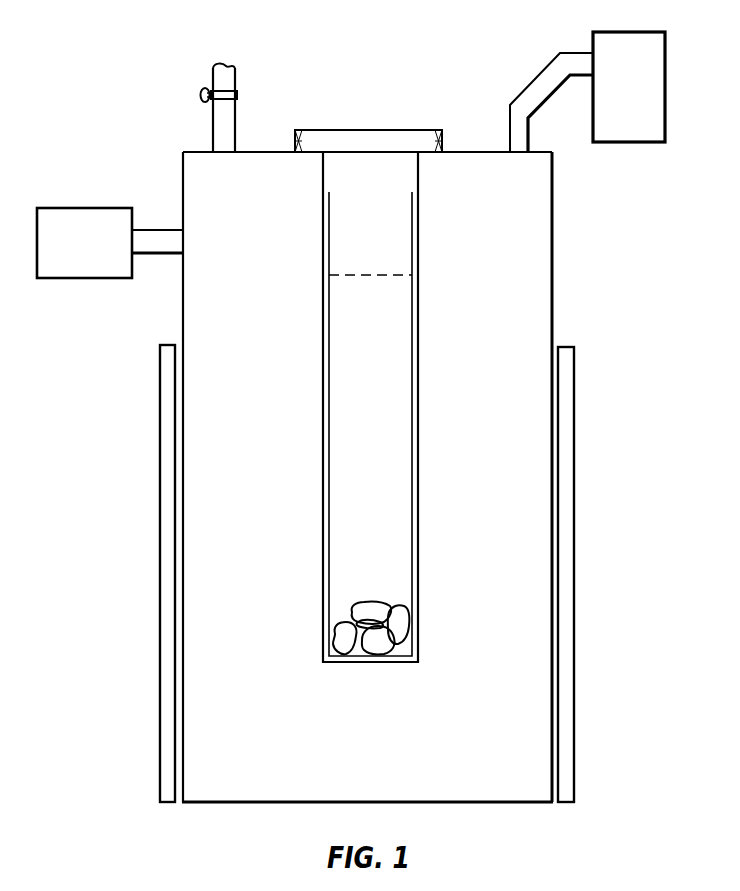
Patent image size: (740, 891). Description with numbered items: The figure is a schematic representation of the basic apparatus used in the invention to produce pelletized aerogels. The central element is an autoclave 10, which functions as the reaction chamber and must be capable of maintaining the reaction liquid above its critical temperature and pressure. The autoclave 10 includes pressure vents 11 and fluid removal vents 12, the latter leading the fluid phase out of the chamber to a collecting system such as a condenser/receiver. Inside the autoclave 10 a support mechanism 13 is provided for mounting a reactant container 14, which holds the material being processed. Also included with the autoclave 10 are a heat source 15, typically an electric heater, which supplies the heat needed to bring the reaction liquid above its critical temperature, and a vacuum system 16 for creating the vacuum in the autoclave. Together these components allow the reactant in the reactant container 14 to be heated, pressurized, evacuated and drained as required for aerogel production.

The autoclave 10 is at (553, 255).
The pressure vents 11 is at (238, 125).
The fluid removal vents 12 is at (526, 93).
The support mechanism 13 is at (326, 500).
The reactant container 14 is at (322, 652).
The heat source 15 is at (570, 708).
The vacuum system 16 is at (88, 218).